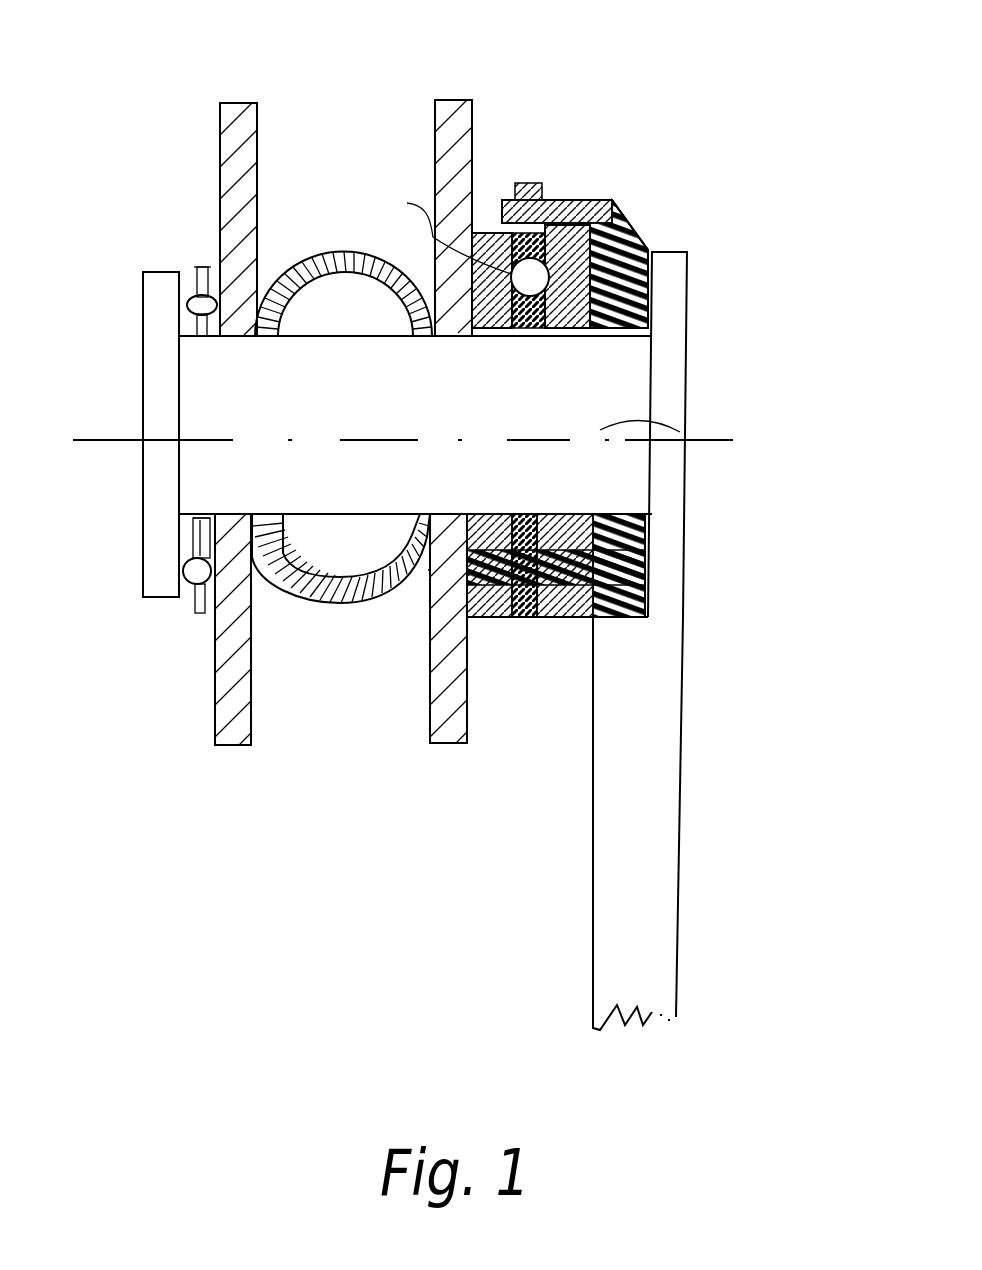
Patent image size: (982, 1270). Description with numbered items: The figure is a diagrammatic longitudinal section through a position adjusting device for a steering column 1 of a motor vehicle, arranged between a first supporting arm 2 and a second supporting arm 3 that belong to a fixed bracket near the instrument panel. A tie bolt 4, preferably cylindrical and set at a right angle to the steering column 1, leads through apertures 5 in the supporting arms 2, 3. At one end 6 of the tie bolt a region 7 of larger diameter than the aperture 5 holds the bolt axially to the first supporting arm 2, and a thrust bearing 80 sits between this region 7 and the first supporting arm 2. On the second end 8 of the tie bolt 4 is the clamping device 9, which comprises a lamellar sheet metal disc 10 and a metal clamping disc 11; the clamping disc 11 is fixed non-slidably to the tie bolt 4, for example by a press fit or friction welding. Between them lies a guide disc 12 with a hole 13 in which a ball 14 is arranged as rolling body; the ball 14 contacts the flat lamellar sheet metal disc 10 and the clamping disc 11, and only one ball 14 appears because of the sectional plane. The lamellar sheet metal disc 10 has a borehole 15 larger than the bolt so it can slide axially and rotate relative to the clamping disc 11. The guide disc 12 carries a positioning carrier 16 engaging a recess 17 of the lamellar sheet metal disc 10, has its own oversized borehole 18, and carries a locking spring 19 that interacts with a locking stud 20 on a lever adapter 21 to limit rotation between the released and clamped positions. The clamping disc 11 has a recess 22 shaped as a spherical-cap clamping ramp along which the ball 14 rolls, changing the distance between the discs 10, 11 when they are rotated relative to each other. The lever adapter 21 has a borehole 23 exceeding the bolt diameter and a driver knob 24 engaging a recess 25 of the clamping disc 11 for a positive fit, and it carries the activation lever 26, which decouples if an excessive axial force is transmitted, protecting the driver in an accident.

The steering column 1 is at (300, 263).
The first supporting arm 2 is at (240, 100).
The second supporting arm 3 is at (455, 100).
The tie bolt 4 is at (305, 497).
The apertures 5 is at (222, 523).
The end of the tie bolt 6 is at (162, 493).
The region with larger diameter 7 is at (145, 337).
The second end of the tie bolt 8 is at (627, 437).
The clamping device 9 is at (588, 177).
The lamellar sheet metal disc 10 is at (495, 617).
The clamping disc 11 is at (617, 208).
The guide disc 12 is at (512, 618).
The hole 13 is at (487, 233).
The ball 14 is at (491, 235).
The borehole 15 is at (477, 338).
The positioning carrier 16 is at (434, 620).
The recess 17 is at (428, 597).
The borehole 18 is at (522, 330).
The locking spring 19 is at (505, 200).
The locking stud 20 is at (518, 184).
The lever adapter 21 is at (650, 585).
The recess 22 is at (653, 252).
The borehole 23 is at (630, 335).
The driver knob 24 is at (572, 618).
The recess 25 is at (562, 618).
The activation lever 26 is at (665, 968).
The thrust bearing 80 is at (197, 290).